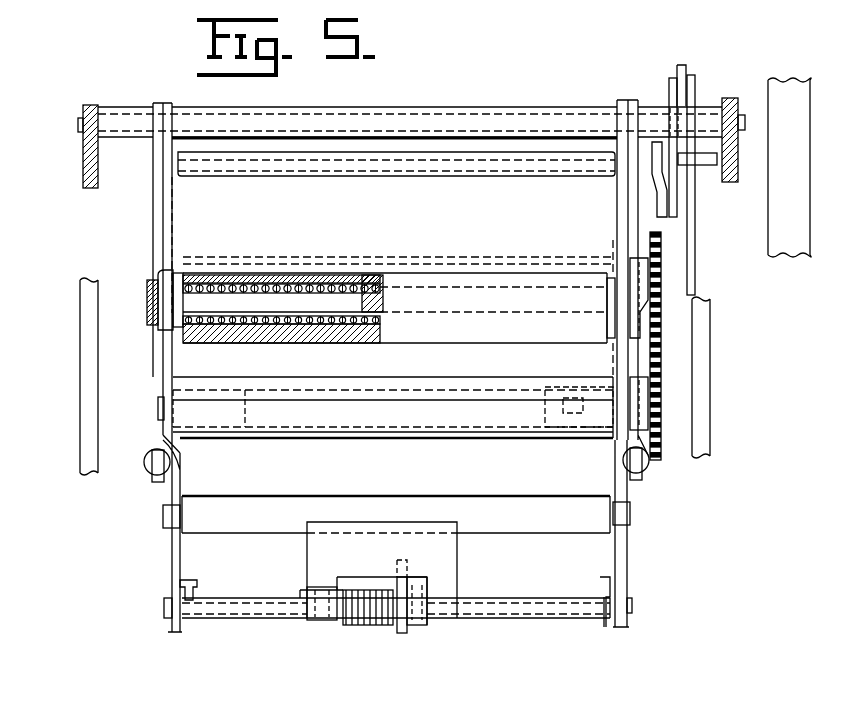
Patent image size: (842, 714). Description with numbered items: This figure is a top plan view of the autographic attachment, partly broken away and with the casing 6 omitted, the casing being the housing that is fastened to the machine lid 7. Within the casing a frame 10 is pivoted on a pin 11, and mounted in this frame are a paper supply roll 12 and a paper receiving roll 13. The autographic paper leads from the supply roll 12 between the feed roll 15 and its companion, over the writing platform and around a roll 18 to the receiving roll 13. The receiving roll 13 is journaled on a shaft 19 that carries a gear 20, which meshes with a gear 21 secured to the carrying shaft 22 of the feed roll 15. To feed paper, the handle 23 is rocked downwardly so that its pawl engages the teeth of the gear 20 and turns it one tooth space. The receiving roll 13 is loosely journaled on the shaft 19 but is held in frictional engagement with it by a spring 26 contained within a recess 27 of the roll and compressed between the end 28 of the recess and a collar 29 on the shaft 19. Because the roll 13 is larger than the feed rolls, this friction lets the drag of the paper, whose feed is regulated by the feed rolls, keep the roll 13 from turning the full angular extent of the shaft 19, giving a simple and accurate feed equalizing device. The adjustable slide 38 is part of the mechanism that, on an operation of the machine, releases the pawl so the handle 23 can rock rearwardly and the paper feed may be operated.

The casing 6 is at (270, 275).
The machine lid 7 is at (83, 165).
The frame 10 is at (357, 152).
The pin 11 is at (82, 118).
The paper supply roll 12 is at (518, 520).
The paper receiving roll 13 is at (510, 327).
The feed roll 15 is at (407, 437).
The roll 18 is at (488, 107).
The shaft 19 is at (358, 277).
The gear 20 is at (660, 300).
The gear 21 is at (662, 398).
The carrying shaft 22 is at (558, 420).
The handle 23 is at (673, 94).
The spring 26 is at (302, 277).
The recess 27 is at (211, 275).
The end of recess 28 is at (383, 277).
The collar 29 is at (168, 300).
The adjustable slide 38 is at (690, 197).